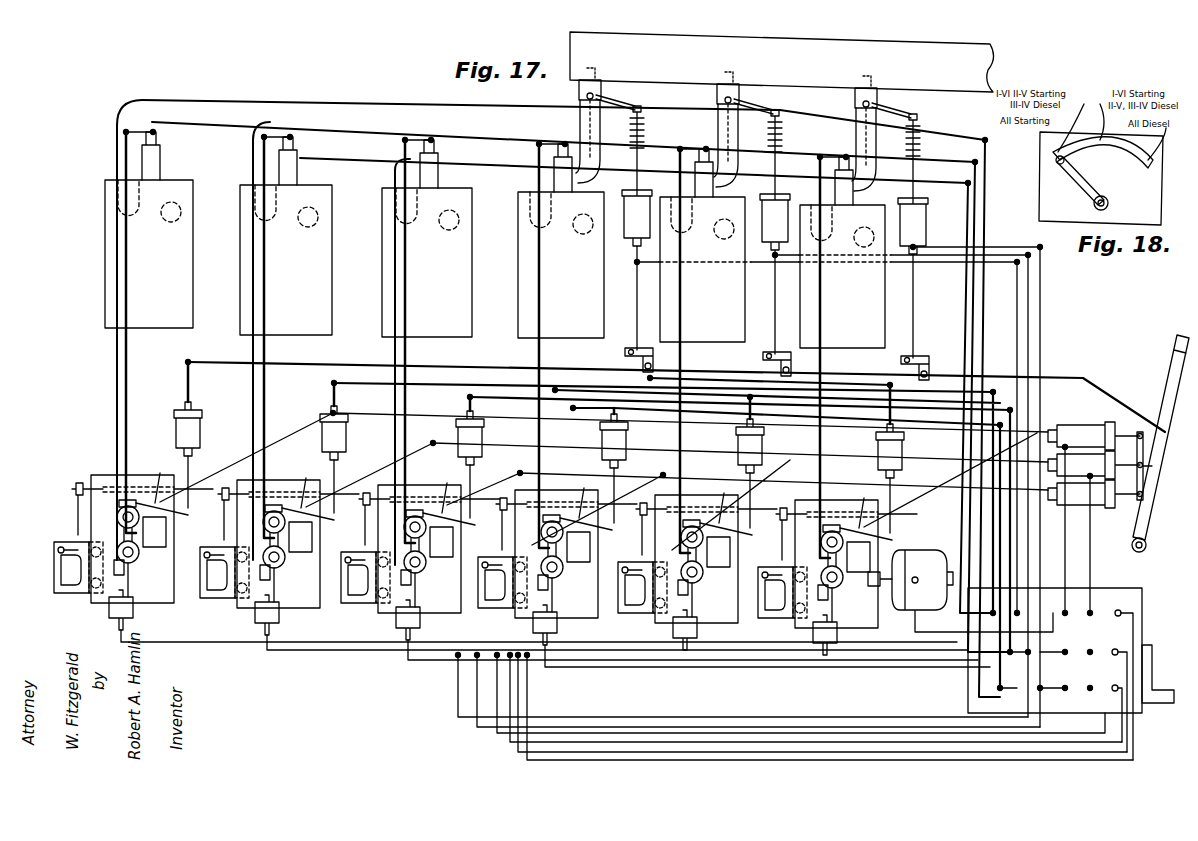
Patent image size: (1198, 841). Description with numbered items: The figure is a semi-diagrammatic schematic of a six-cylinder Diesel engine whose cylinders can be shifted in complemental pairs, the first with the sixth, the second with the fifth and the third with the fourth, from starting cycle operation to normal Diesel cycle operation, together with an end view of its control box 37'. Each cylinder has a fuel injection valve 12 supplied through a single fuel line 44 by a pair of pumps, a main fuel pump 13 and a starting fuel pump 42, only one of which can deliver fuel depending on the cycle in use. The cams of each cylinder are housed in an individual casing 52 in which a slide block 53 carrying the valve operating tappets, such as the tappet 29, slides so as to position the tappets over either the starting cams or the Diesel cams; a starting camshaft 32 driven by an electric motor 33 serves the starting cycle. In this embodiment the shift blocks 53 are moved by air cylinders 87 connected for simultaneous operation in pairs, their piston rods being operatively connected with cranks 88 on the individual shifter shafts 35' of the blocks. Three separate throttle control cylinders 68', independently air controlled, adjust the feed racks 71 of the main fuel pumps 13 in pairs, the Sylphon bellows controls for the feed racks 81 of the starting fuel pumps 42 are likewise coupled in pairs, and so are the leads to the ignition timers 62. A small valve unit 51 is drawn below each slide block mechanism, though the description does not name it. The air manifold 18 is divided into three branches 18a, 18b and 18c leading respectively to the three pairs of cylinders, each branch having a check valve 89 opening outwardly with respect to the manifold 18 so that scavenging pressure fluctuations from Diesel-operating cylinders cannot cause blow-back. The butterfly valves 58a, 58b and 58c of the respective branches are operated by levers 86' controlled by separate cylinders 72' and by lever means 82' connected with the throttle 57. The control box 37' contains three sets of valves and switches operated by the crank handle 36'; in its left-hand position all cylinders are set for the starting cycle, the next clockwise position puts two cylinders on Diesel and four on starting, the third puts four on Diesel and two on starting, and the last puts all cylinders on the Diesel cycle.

In FIG. 17, the fuel injection valve 12 is at (858, 193).
In FIG. 17, the fuel pump 13 is at (694, 523).
In FIG. 17, the air manifold 18 is at (681, 40).
In FIG. 17, the branch 18a is at (328, 105).
In FIG. 17, the branch 18b is at (350, 150).
In FIG. 17, the branch 18c is at (487, 185).
In FIG. 17, the valve operating tappet 29 is at (551, 575).
In FIG. 17, the starting camshaft 32 is at (882, 590).
In FIG. 17, the electric motor 33 is at (912, 600).
In FIG. 17, the shifter shaft 35' is at (483, 513).
In FIG. 17, the crank handle 36' is at (1162, 674).
In FIG. 18, the crank handle 36' is at (1090, 183).
In FIG. 17, the control box 37' is at (1055, 662).
In FIG. 18, the control box 37' is at (1026, 183).
In FIG. 17, the starting fuel pump 42 is at (838, 595).
In FIG. 17, the fuel line 44 is at (825, 313).
In FIG. 17, the control valve 51 is at (812, 641).
In FIG. 17, the casing 52 is at (879, 646).
In FIG. 17, the slide block 53 is at (758, 593).
In FIG. 17, the throttle 57 is at (1180, 382).
In FIG. 17, the butterfly valve 58a is at (579, 93).
In FIG. 17, the butterfly valve 58b is at (717, 97).
In FIG. 17, the butterfly valve 58c is at (855, 101).
In FIG. 17, the ignition timer 62 is at (879, 565).
In FIG. 17, the throttle control cylinder 68' is at (1098, 509).
In FIG. 17, the feed rack 71 is at (515, 493).
In FIG. 17, the cylinder 72' is at (832, 416).
In FIG. 17, the feed rack 81 is at (692, 590).
In FIG. 17, the lever means 82' is at (760, 364).
In FIG. 17, the lever 86' is at (757, 100).
In FIG. 17, the air cylinder 87 is at (906, 457).
In FIG. 17, the crank 88 is at (530, 507).
In FIG. 17, the check valve 89 is at (871, 88).